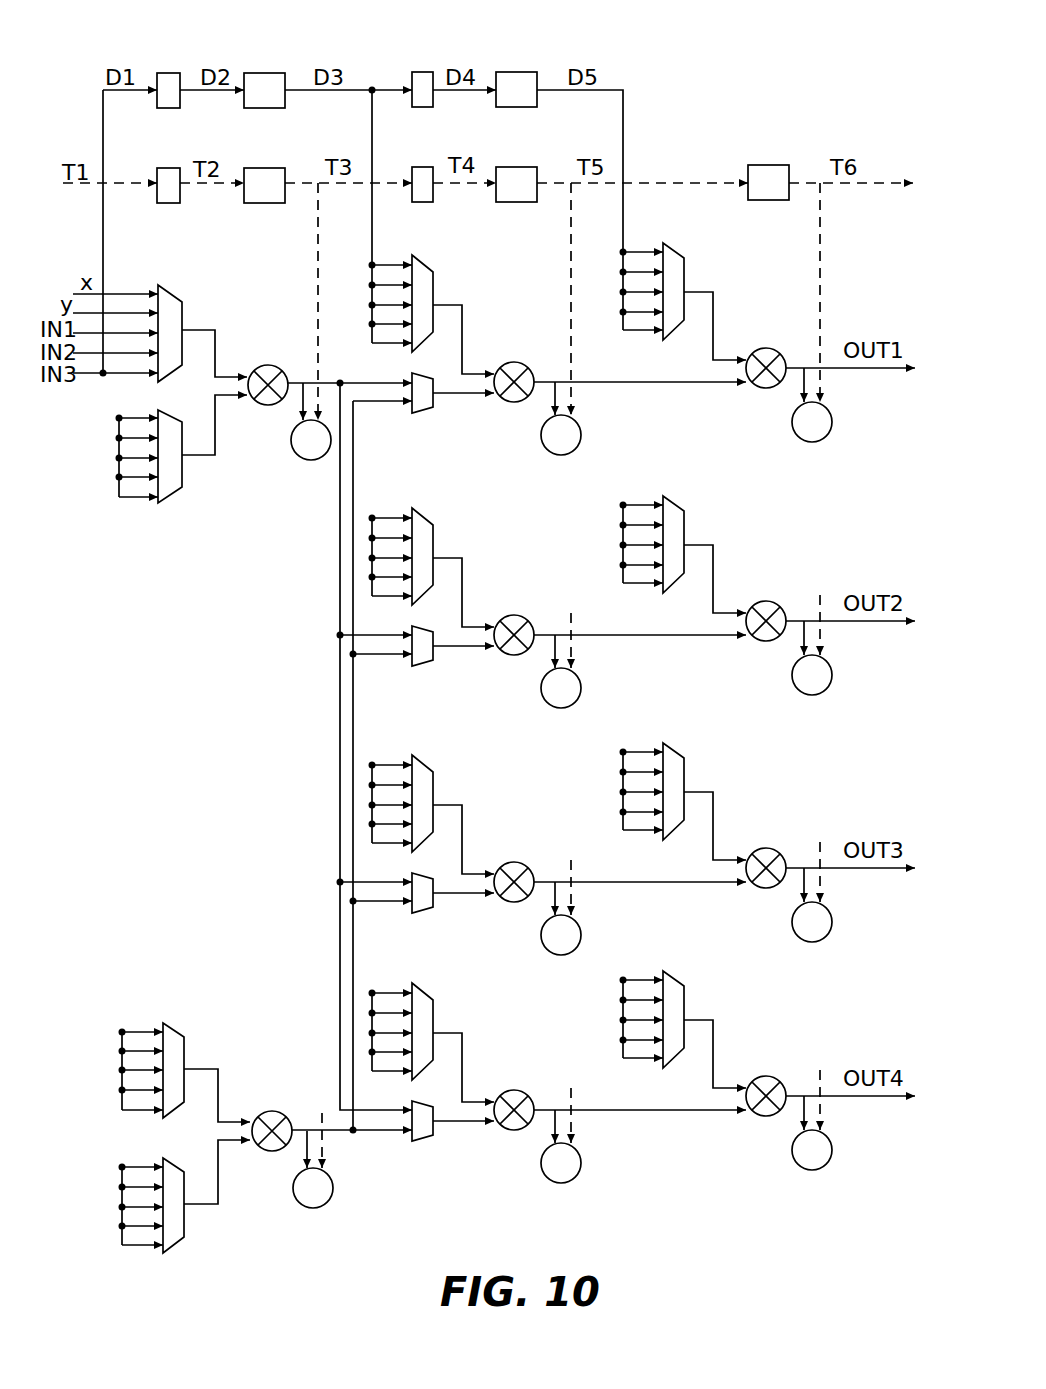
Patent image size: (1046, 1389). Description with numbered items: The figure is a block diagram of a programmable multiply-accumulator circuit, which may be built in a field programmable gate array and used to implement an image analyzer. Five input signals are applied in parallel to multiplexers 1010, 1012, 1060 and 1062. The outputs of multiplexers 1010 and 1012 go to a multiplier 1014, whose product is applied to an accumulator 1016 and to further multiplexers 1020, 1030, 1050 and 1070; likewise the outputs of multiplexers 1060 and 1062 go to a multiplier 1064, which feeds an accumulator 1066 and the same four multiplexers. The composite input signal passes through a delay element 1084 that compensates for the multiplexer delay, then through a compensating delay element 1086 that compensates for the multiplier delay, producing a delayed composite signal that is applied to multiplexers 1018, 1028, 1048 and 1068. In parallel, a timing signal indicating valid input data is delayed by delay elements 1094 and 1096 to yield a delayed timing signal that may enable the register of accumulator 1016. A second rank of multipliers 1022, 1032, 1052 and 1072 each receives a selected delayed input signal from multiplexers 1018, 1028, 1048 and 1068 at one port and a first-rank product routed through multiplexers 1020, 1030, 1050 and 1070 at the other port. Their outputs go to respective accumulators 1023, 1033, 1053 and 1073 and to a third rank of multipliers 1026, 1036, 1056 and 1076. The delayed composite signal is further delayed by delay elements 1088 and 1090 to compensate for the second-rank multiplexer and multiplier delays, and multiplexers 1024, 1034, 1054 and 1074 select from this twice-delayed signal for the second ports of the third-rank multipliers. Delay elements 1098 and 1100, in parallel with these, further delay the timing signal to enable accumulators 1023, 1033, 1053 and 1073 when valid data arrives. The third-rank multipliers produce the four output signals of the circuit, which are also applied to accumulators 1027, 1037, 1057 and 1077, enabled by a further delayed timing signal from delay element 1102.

The multiplexer 1010 is at (165, 290).
The multiplexer 1012 is at (182, 478).
The multiplier 1014 is at (268, 365).
The accumulator 1016 is at (305, 460).
The multiplexer 1018 is at (424, 260).
The multiplexer 1020 is at (425, 412).
The multiplier 1022 is at (514, 362).
The accumulator 1023 is at (581, 435).
The multiplexer 1024 is at (670, 245).
The multiplier 1026 is at (766, 348).
The accumulator 1027 is at (813, 442).
The multiplexer 1028 is at (425, 513).
The multiplexer 1030 is at (415, 666).
The multiplier 1032 is at (514, 615).
The accumulator 1033 is at (553, 706).
The multiplexer 1034 is at (672, 503).
The multiplier 1036 is at (766, 601).
The accumulator 1037 is at (828, 688).
The multiplexer 1048 is at (425, 760).
The multiplexer 1050 is at (415, 913).
The multiplier 1052 is at (514, 862).
The accumulator 1053 is at (553, 953).
The multiplexer 1054 is at (672, 748).
The multiplier 1056 is at (766, 848).
The accumulator 1057 is at (828, 935).
The multiplexer 1060 is at (170, 1028).
The multiplexer 1062 is at (184, 1220).
The multiplier 1064 is at (270, 1111).
The accumulator 1066 is at (330, 1200).
The multiplexer 1068 is at (427, 997).
The multiplexer 1070 is at (425, 1141).
The multiplier 1072 is at (514, 1090).
The accumulator 1073 is at (575, 1178).
The multiplexer 1074 is at (672, 975).
The multiplier 1076 is at (766, 1076).
The accumulator 1077 is at (825, 1165).
The delay element 1084 is at (165, 73).
The compensating delay element 1086 is at (258, 73).
The delay element 1088 is at (418, 72).
The delay element 1090 is at (515, 72).
The delay element 1094 is at (168, 168).
The delay element 1096 is at (270, 168).
The delay element 1098 is at (418, 167).
The delay element 1100 is at (518, 167).
The delay element 1102 is at (750, 165).